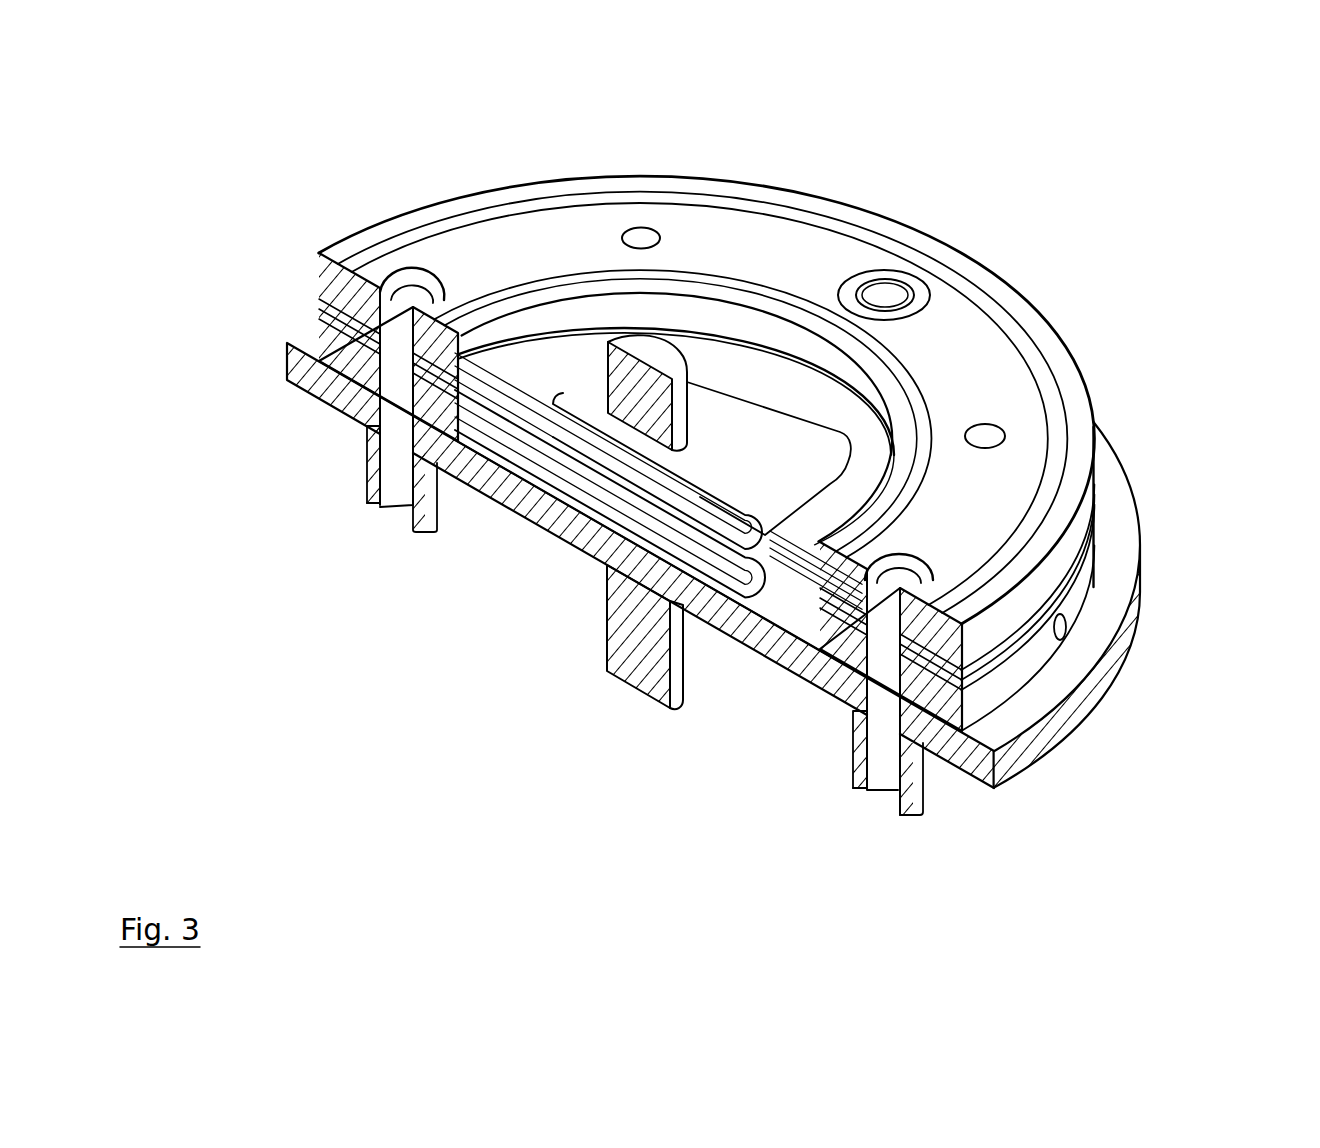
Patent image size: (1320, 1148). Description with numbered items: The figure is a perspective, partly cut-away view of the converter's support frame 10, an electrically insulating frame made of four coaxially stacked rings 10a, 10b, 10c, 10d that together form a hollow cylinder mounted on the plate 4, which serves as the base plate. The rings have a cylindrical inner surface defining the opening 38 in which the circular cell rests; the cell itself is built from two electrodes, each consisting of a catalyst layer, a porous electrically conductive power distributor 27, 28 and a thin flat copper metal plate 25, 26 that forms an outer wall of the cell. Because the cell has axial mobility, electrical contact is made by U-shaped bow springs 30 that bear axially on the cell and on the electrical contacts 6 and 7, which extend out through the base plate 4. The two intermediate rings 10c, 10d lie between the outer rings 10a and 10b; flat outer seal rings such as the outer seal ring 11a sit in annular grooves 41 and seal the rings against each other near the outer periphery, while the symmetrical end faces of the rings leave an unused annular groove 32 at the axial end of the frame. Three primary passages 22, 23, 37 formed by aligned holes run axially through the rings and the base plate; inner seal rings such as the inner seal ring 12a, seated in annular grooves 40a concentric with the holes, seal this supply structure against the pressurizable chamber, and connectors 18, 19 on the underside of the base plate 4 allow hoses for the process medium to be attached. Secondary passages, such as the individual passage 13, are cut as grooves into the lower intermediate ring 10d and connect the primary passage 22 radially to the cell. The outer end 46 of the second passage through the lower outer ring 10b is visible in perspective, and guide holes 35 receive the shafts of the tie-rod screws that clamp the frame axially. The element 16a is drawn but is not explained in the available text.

The plate 4 is at (820, 672).
The electrical contact 6 is at (632, 355).
The electrical contact 7 is at (643, 677).
The support frame 10 is at (1097, 370).
The outer upper ring 10a is at (1070, 547).
The lower outer ring 10b is at (1012, 687).
The intermediate ring 10c is at (1066, 587).
The lower intermediate ring 10d is at (1016, 653).
The outer seal ring 11a is at (932, 745).
The inner seal ring 12a is at (915, 745).
The individual passage 13 is at (422, 395).
The connection pin 16a is at (523, 400).
The connector 18 is at (365, 482).
The connector 19 is at (862, 768).
The primary passage 22 is at (397, 412).
The primary passage 23 is at (884, 697).
The metal plate 25 is at (866, 456).
The metal plate 26 is at (536, 430).
The power distributor 27 is at (810, 660).
The power distributor 28 is at (547, 440).
The spring 30 is at (740, 432).
The annular groove 32 is at (480, 313).
The guide hole 35 is at (647, 237).
The primary passage 37 is at (883, 298).
The opening 38 is at (718, 323).
The annular groove 40a is at (390, 272).
The annular groove 41 is at (405, 234).
The outer end 46 is at (1066, 632).